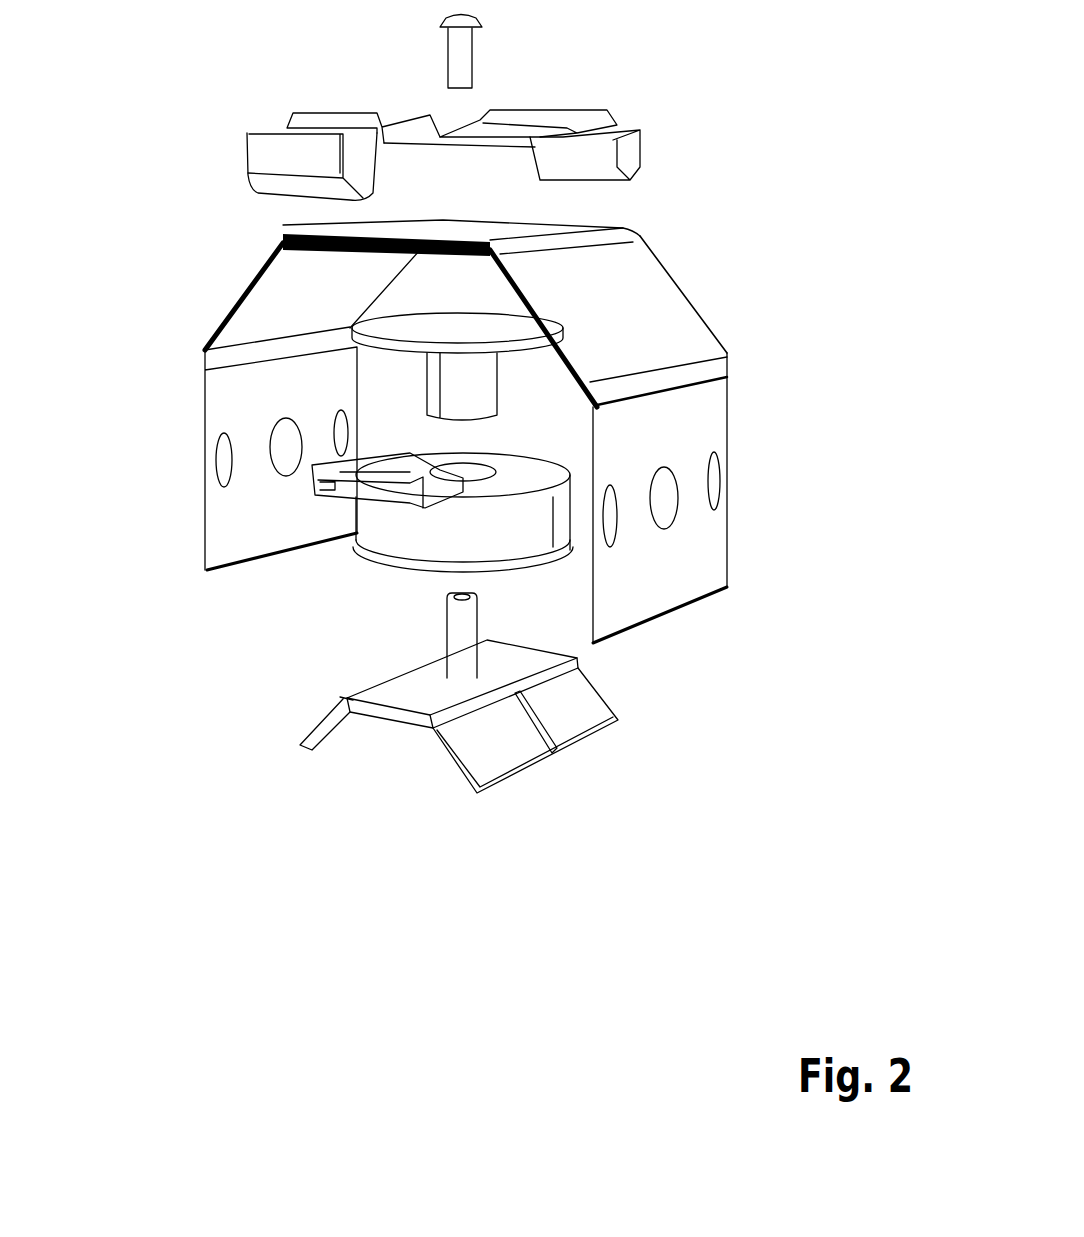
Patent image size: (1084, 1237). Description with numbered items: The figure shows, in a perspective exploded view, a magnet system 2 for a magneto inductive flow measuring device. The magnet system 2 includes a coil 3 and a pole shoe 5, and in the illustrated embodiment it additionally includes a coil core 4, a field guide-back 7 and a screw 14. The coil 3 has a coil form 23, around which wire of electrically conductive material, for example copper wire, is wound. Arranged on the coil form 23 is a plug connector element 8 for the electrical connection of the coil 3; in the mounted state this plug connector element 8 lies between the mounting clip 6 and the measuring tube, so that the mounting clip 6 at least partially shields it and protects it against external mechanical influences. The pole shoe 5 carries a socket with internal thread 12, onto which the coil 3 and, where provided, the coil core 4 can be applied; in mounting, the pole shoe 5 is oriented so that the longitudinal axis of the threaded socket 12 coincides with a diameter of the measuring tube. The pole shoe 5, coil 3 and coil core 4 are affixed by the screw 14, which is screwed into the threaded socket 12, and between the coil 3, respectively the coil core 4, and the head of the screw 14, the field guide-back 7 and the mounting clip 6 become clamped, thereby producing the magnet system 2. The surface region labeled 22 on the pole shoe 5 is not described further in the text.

The magnet system 2 is at (163, 97).
The coil 3 is at (513, 535).
The coil core 4 is at (467, 377).
The pole shoe 5 is at (573, 718).
The mounting clip 6 is at (625, 142).
The field guide-back 7 is at (705, 423).
The plug connector element 8 is at (370, 488).
The threaded socket 12 is at (460, 632).
The screw 14 is at (460, 48).
The support surface 22 is at (406, 692).
The coil form 23 is at (530, 470).